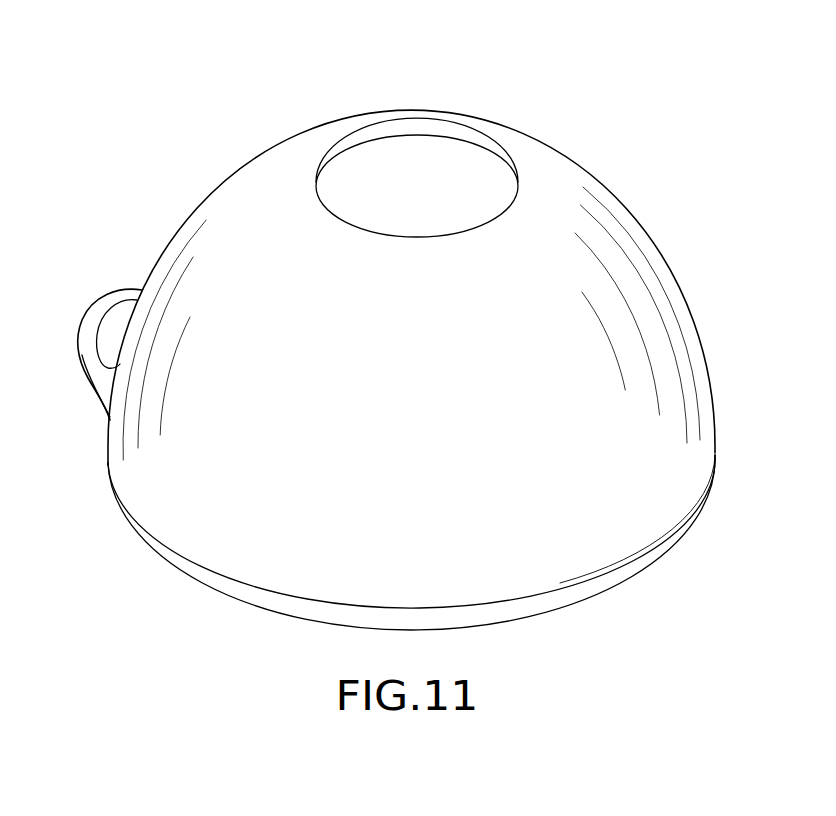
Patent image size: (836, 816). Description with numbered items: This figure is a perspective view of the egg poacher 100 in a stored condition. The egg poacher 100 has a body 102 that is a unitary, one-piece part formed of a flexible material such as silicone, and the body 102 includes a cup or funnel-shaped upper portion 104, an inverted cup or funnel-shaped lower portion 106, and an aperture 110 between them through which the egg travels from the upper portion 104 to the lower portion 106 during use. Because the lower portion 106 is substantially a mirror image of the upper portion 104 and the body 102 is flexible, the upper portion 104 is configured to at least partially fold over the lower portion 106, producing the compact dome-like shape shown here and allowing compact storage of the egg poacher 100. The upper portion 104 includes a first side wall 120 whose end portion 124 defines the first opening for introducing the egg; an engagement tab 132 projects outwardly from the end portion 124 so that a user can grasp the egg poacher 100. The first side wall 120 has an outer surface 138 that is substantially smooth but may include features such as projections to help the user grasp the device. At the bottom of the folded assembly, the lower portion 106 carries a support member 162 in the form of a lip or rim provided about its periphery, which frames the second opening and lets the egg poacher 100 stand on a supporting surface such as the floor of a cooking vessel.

The egg poacher 100 is at (604, 86).
The body 102 is at (276, 188).
The upper portion 104 is at (230, 243).
The lower portion 106 is at (562, 612).
The aperture 110 is at (425, 168).
The first side wall 120 is at (608, 532).
The end portion 124 is at (197, 530).
The engagement tab 132 is at (80, 354).
The outer surface 138 is at (560, 180).
The support member 162 is at (244, 600).